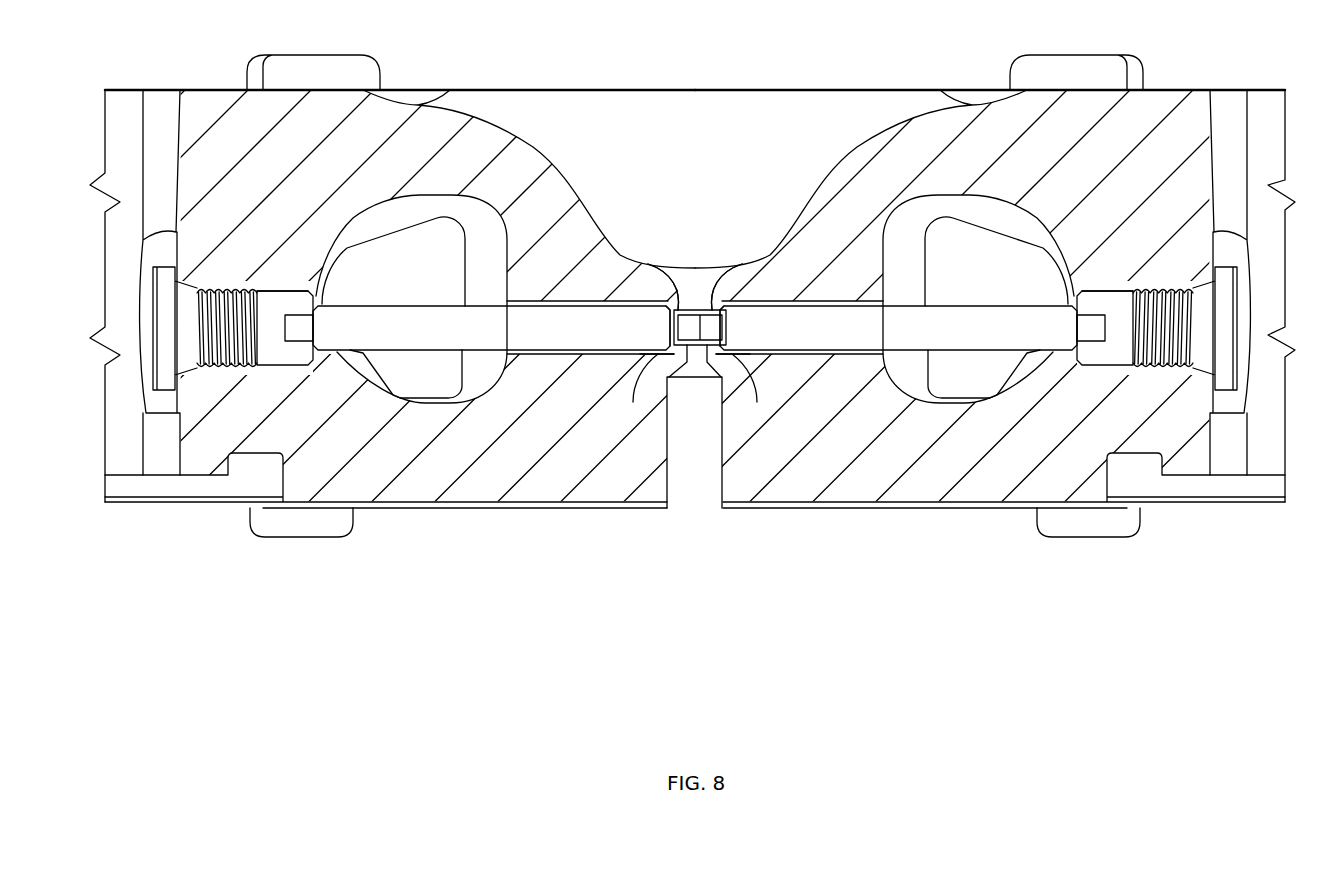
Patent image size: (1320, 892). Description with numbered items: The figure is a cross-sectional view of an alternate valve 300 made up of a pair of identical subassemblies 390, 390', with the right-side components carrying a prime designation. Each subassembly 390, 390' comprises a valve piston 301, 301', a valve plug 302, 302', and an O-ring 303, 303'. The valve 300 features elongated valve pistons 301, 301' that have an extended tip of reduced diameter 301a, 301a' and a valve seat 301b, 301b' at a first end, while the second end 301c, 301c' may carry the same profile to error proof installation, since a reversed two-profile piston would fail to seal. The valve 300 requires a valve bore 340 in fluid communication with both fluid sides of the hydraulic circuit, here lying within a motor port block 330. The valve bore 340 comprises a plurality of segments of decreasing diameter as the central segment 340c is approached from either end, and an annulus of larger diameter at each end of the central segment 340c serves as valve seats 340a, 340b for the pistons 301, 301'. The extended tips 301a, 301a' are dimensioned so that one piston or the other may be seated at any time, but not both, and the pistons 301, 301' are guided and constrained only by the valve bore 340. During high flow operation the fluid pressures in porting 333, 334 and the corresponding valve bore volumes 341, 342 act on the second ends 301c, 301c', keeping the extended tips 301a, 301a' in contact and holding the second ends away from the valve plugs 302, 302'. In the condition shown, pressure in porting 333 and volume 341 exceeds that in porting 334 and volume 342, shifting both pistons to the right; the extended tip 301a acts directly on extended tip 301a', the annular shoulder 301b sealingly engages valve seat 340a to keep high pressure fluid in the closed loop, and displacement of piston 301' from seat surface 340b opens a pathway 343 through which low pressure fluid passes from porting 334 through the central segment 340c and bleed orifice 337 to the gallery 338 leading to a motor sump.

The valve 300 is at (128, 306).
The motor port block 330 is at (1170, 89).
The porting 333 is at (368, 214).
The porting 334 is at (990, 198).
The bleed orifice 337 is at (696, 362).
The gallery 338 is at (716, 478).
The valve bore 340 is at (285, 300).
The valve seat 340a is at (658, 345).
The valve seat 340b is at (732, 345).
The central segment 340c is at (690, 310).
The valve bore volume 341 is at (293, 290).
The valve bore volume 342 is at (1108, 290).
The pathway 343 is at (710, 307).
The valve piston 301 is at (491, 328).
The valve piston 301' is at (898, 328).
The extended tip 301a is at (637, 389).
The extended tip 301a' is at (756, 389).
The valve seat 301b is at (650, 284).
The valve seat 301b' is at (754, 278).
The second end 301c is at (316, 365).
The second end 301c' is at (1065, 360).
The valve plug 302 is at (239, 345).
The valve plug 302' is at (1151, 345).
The O-ring 303 is at (204, 347).
The O-ring 303' is at (1183, 347).
The subassembly 390 is at (689, 415).
The subassembly 390' is at (689, 415).